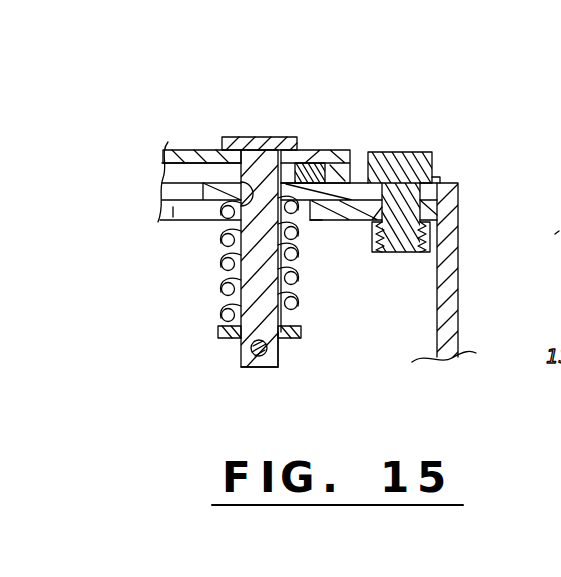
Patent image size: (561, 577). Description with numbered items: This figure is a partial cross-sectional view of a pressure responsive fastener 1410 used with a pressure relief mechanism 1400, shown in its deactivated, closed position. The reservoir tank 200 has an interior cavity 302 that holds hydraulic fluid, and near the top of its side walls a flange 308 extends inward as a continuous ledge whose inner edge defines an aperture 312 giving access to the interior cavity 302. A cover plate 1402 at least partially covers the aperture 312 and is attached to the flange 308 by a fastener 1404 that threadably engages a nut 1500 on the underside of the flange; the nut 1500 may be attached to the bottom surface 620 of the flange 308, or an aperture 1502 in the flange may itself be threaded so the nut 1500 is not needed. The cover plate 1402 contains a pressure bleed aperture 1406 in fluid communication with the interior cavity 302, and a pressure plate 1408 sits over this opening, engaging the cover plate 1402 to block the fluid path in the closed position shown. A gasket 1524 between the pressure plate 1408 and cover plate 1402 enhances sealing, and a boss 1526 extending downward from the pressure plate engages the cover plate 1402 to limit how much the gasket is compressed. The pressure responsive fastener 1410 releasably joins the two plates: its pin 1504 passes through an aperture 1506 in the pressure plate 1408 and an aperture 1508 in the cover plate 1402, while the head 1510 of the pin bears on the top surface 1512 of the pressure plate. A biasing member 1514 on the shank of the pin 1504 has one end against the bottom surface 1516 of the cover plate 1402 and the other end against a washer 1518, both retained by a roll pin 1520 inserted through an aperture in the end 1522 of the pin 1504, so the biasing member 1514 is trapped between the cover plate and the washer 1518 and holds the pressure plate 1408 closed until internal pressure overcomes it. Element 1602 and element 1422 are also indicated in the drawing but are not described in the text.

The pressure relief mechanism 1400 is at (118, 58).
The head 1510 is at (228, 137).
The top surface 1512 is at (205, 148).
The pin 1504 is at (240, 137).
The pressure responsive fastener 1410 is at (270, 128).
The aperture 1508 is at (282, 148).
The pressure plate 1408 is at (328, 148).
The gasket 1524 is at (372, 152).
The fastener 1404 is at (410, 150).
The boss 1526 is at (434, 153).
The cover plate 1402 is at (448, 182).
The nut 1500 is at (440, 240).
The bracket 1602 is at (553, 236).
The aperture 1502 is at (392, 244).
The reservoir tank 200 is at (458, 305).
The flange 308 is at (335, 225).
The bottom surface 620 is at (322, 222).
The interior cavity 302 is at (378, 353).
The end 1522 is at (280, 366).
The roll pin 1520 is at (261, 363).
The washer 1518 is at (210, 340).
The biasing member 1514 is at (222, 318).
The aperture 1506 is at (222, 240).
The bottom surface 1516 is at (226, 208).
The aperture 312 is at (180, 222).
The pressure bleed aperture 1406 is at (185, 190).
The collar 1422 is at (165, 145).